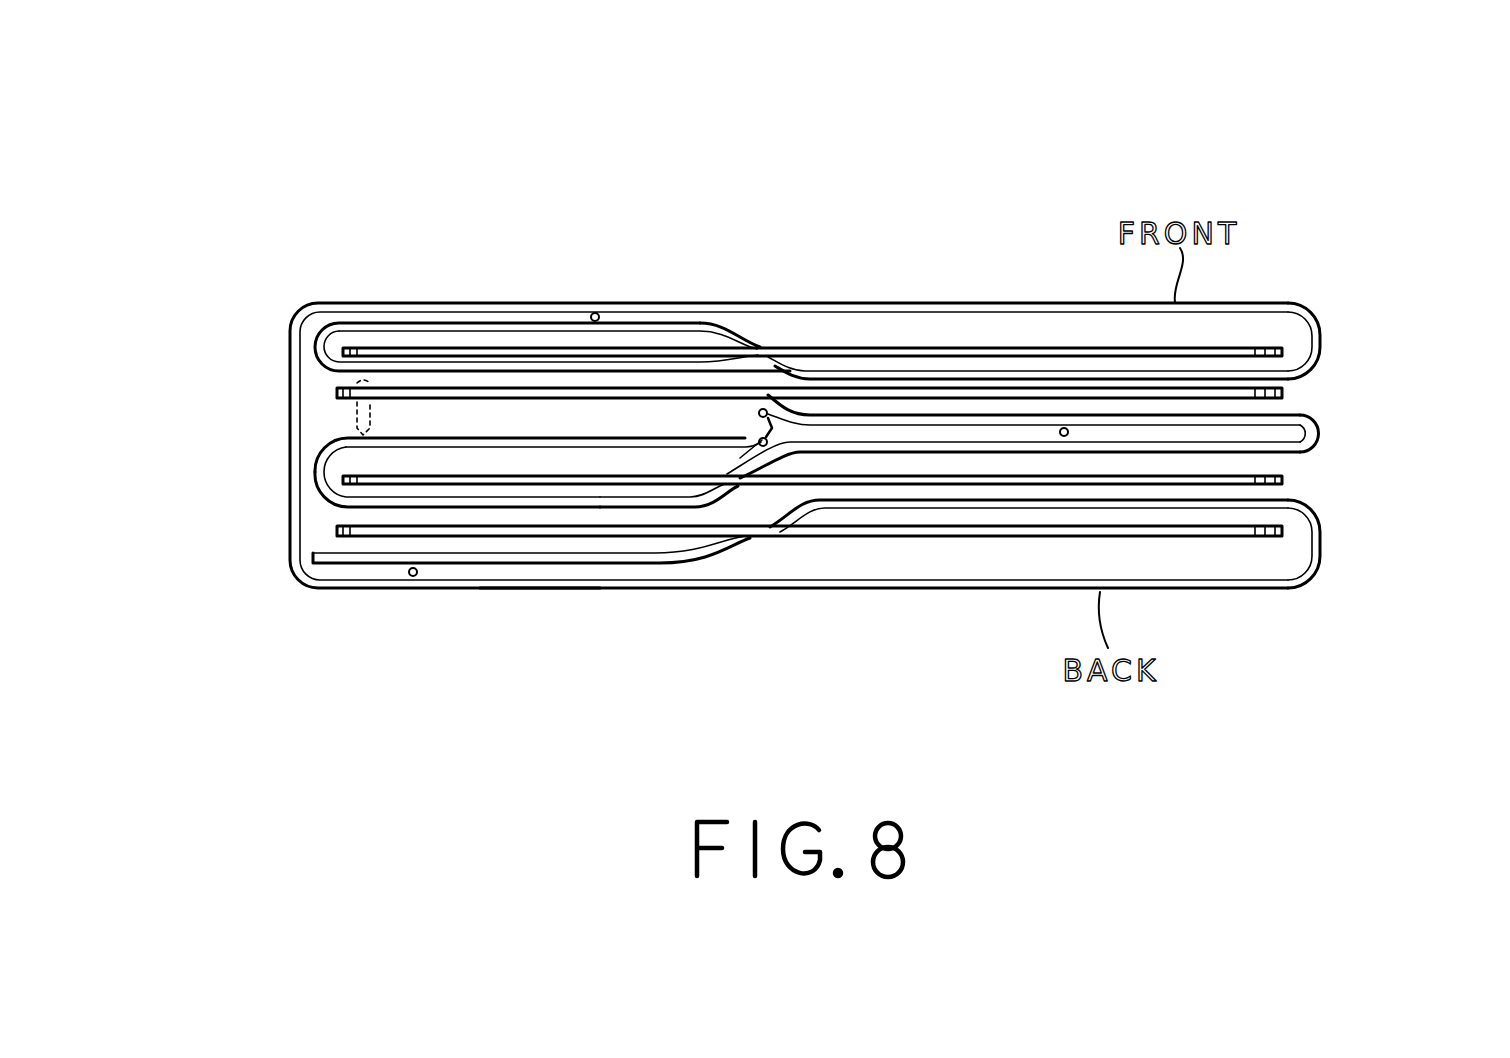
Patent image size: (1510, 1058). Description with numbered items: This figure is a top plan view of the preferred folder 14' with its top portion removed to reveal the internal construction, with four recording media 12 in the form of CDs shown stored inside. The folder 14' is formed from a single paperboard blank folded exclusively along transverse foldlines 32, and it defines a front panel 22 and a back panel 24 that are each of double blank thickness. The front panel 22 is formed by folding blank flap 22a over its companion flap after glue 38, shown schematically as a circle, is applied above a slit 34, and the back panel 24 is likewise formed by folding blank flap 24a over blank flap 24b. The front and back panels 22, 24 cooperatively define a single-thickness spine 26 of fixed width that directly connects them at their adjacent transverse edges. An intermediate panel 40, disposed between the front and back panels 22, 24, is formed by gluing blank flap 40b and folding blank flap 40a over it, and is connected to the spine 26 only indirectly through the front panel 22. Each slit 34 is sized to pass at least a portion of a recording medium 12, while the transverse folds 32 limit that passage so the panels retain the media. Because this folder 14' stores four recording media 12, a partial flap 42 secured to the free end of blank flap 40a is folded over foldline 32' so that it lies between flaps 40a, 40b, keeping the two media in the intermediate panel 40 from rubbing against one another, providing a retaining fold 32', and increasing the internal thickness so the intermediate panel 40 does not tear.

The recording media 12 is at (343, 347).
The folder 14' is at (789, 350).
The front panel 22 is at (1343, 380).
The blank flap 22a is at (718, 405).
The back panel 24 is at (1343, 498).
The blank flap 24a is at (478, 566).
The blank flap 24b is at (537, 591).
The spine 26 is at (313, 351).
The transverse foldline 32 is at (1352, 444).
The transverse foldline 32' is at (477, 467).
The slit 34 is at (795, 405).
The glue 38 is at (377, 413).
The intermediate panel 40 is at (1343, 380).
The blank flap 40a is at (616, 512).
The blank flap 40b is at (444, 344).
The partial flap 42 is at (566, 434).